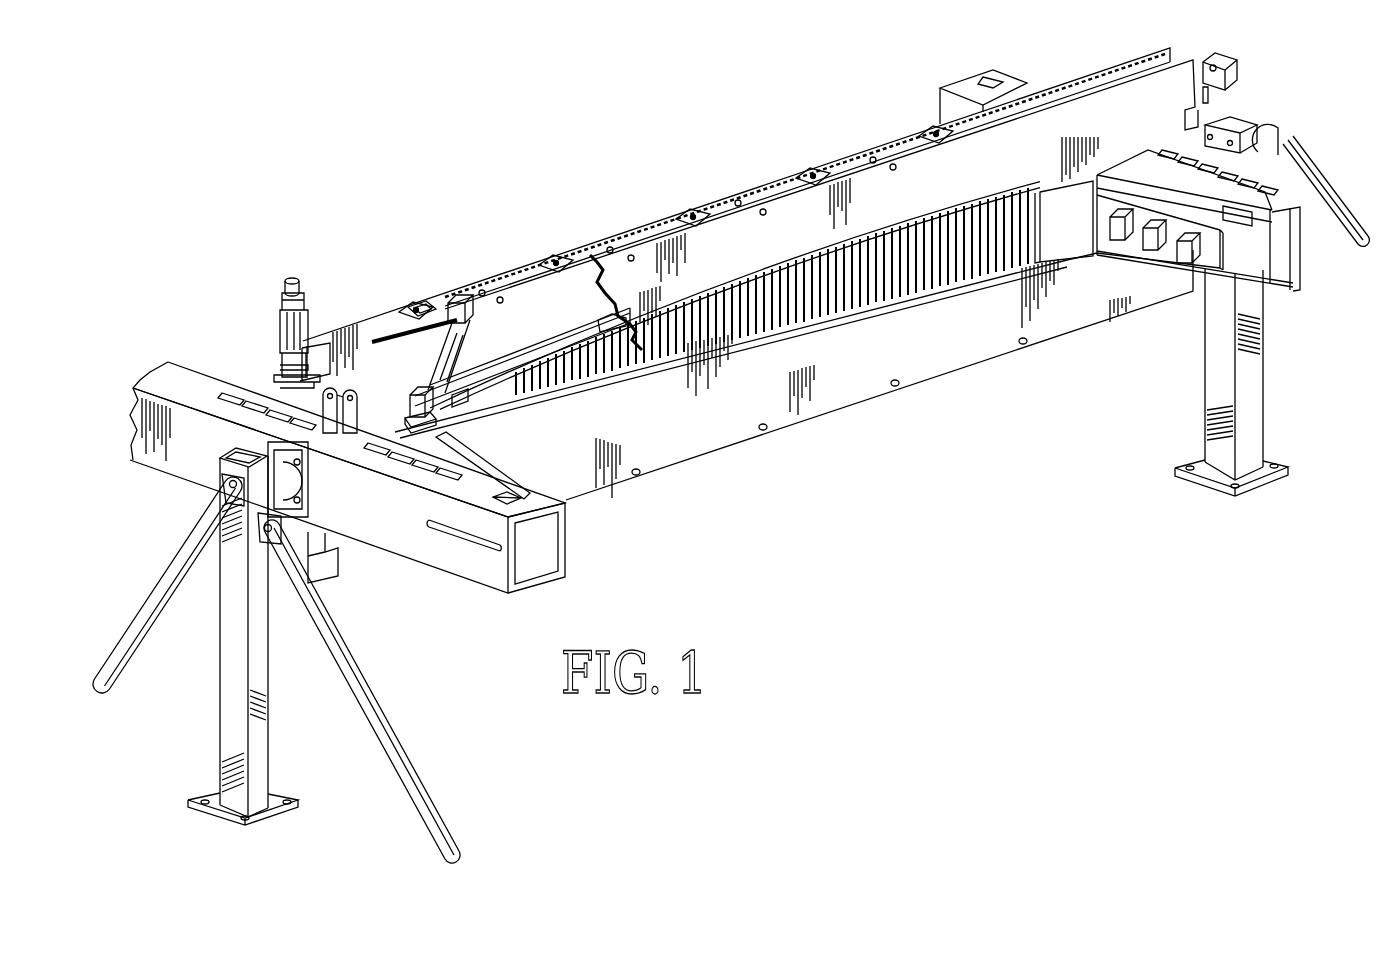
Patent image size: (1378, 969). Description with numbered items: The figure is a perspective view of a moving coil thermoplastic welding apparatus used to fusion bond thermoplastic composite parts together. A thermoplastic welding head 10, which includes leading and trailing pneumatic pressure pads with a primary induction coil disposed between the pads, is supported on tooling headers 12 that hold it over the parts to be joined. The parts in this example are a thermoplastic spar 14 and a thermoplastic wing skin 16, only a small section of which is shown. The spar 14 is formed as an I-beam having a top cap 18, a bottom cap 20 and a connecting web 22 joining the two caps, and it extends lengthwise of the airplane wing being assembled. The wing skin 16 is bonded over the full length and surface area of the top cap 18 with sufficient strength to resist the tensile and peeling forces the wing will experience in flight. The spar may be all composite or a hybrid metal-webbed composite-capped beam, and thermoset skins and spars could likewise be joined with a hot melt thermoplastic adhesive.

The thermoplastic welding head 10 is at (416, 365).
The tooling headers 12 is at (856, 161).
The thermoplastic spar 14 is at (892, 266).
The thermoplastic wing skin 16 is at (633, 340).
The top cap 18 is at (557, 350).
The bottom cap 20 is at (1087, 265).
The connecting web 22 is at (1080, 237).